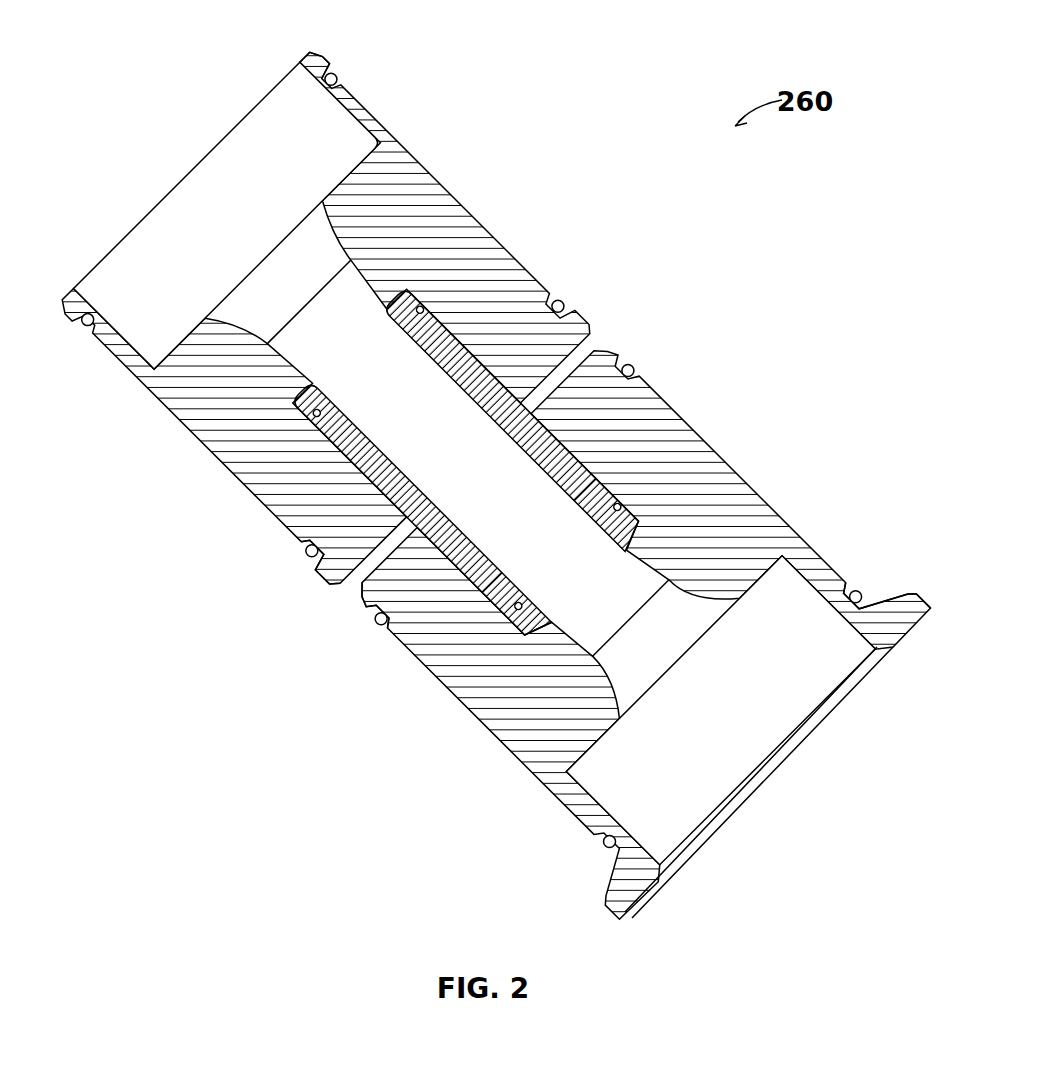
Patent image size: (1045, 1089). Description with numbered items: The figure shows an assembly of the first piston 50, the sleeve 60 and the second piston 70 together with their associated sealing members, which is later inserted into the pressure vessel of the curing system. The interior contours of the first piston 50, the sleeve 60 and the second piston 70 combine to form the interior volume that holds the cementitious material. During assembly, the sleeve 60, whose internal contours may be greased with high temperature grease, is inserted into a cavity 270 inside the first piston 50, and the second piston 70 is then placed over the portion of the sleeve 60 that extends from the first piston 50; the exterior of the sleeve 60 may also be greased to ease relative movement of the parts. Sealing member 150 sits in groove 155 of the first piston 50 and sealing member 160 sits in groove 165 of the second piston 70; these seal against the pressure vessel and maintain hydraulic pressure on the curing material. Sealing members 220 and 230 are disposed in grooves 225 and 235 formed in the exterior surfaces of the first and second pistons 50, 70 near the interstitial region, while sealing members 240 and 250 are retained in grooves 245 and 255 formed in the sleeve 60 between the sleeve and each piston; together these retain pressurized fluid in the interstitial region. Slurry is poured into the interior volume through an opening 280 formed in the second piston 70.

The first piston 50 is at (725, 492).
The sleeve 60 is at (392, 300).
The second piston 70 is at (478, 260).
The sealing member 150 is at (858, 591).
The groove 155 is at (838, 598).
The sealing member 160 is at (335, 73).
The groove 165 is at (306, 55).
The sealing member 220 is at (375, 620).
The groove 225 is at (398, 613).
The sealing member 230 is at (307, 550).
The groove 235 is at (293, 537).
The sealing member 240 is at (510, 612).
The groove 245 is at (517, 610).
The sealing member 250 is at (320, 424).
The groove 255 is at (313, 411).
The cavity 270 is at (597, 481).
The opening 280 is at (150, 212).